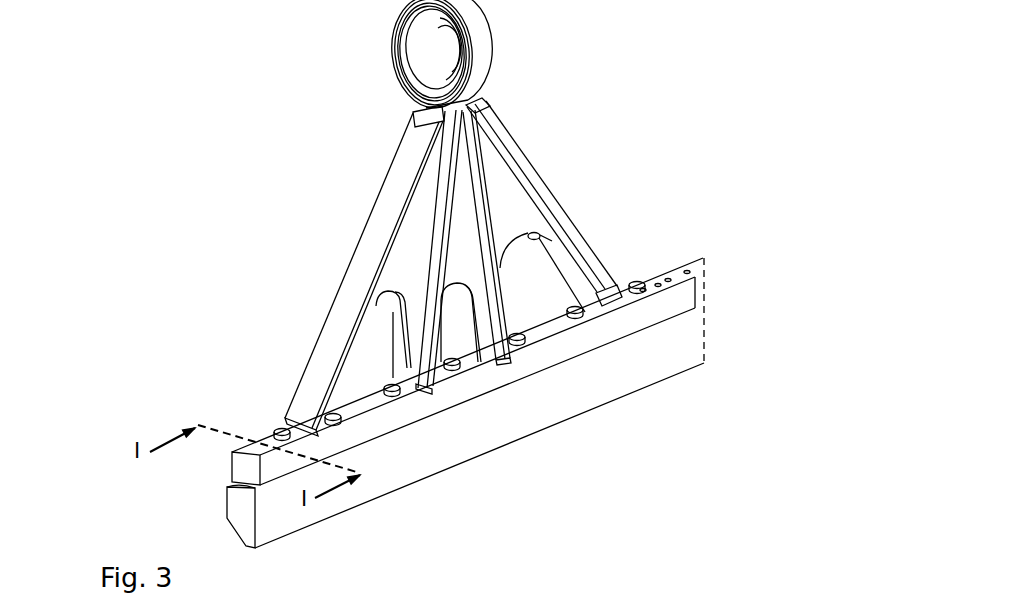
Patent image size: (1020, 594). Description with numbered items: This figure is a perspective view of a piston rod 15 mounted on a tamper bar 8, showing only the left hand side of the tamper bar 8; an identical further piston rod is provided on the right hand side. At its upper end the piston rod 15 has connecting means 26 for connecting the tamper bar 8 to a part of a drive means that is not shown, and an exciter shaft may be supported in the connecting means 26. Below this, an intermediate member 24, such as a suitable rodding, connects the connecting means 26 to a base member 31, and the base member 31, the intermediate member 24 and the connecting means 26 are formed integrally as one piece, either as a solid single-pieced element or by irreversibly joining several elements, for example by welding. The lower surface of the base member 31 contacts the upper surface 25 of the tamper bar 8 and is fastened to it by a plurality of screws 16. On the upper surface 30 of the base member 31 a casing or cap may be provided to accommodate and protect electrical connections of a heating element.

The connecting means 26 is at (482, 39).
The piston rod 15 is at (530, 161).
The intermediate member 24 is at (538, 212).
The screws 16 is at (640, 281).
The base member 31 is at (677, 298).
The tamper bar 8 is at (675, 342).
The upper surface of the base member 30 is at (350, 412).
The upper surface of the tamper bar 25 is at (232, 486).